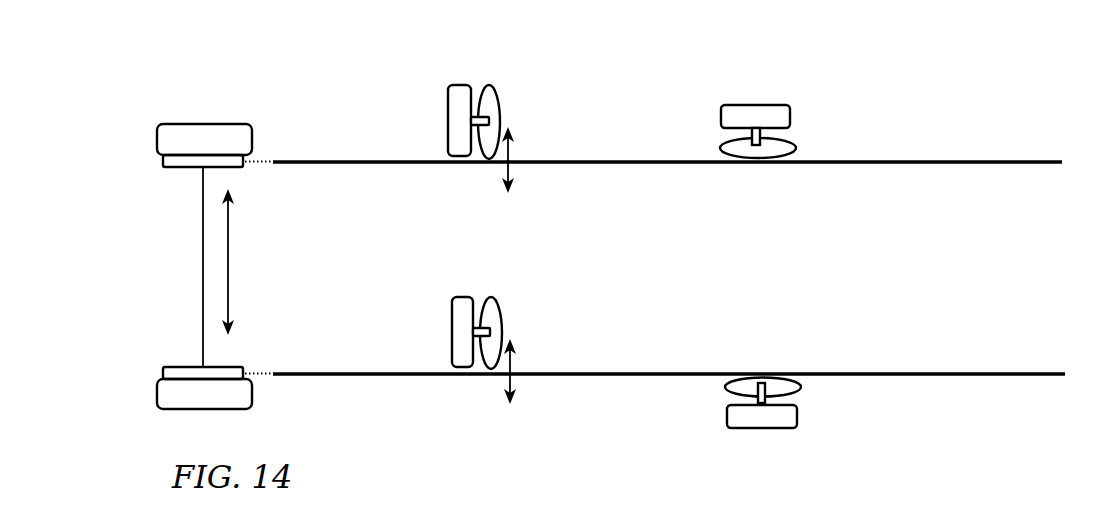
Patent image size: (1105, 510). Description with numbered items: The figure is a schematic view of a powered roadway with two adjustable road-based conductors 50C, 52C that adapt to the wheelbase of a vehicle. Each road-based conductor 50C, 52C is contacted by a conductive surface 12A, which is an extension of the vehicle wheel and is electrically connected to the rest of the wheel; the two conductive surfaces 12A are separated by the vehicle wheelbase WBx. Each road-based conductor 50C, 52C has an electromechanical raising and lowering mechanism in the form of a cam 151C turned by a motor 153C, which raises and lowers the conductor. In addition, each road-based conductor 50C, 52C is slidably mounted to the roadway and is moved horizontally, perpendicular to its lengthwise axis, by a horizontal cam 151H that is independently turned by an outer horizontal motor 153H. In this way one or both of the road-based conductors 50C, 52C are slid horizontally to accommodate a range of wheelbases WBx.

The conductive surface 12A is at (160, 158).
The road-based conductor 50C is at (1010, 160).
The road-based conductor 52C is at (1012, 375).
The horizontal cam 151H is at (500, 100).
The outer horizontal motor 153H is at (462, 85).
The cam 151C is at (795, 147).
The motor 153C is at (792, 117).
The wheelbase WBx is at (266, 262).